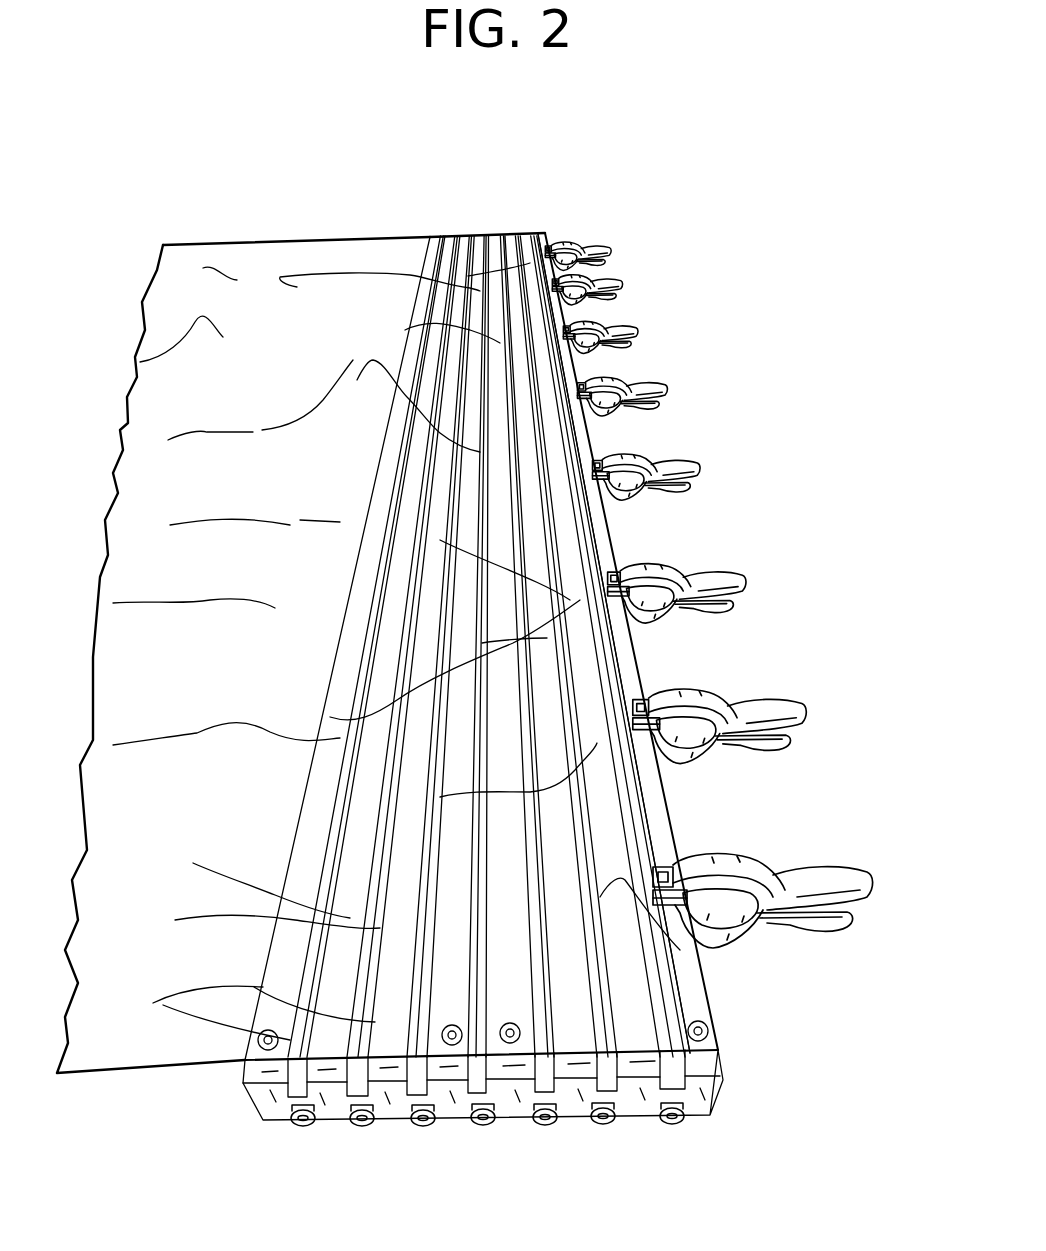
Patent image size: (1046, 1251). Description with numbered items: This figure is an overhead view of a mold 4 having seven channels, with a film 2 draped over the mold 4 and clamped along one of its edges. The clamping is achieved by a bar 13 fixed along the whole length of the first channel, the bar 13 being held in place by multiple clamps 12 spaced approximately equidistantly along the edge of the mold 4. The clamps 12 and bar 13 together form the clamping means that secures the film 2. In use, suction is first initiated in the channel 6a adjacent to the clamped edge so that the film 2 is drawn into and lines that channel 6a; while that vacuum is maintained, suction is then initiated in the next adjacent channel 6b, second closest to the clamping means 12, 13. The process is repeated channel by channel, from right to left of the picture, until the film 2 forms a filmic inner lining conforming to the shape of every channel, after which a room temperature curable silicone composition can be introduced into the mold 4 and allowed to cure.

The film 2 is at (162, 1048).
The mold 4 is at (483, 235).
The channel 6a is at (672, 1124).
The channel 6b is at (603, 1124).
The clamps 12 is at (690, 478).
The bar 13 is at (655, 818).